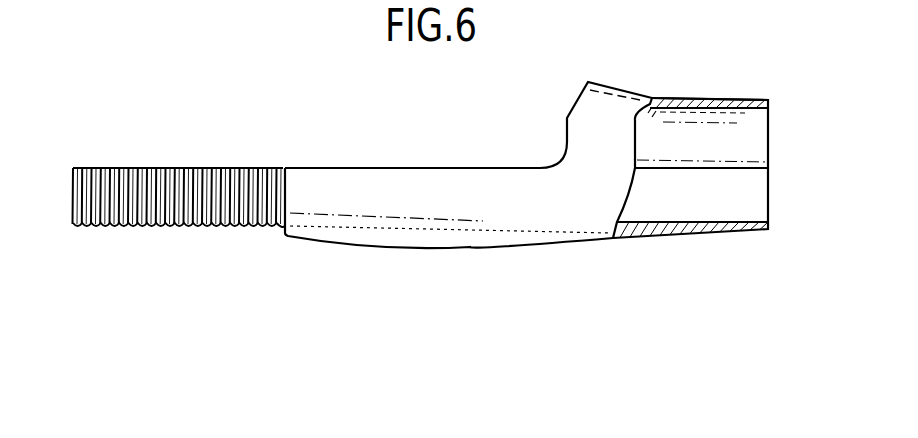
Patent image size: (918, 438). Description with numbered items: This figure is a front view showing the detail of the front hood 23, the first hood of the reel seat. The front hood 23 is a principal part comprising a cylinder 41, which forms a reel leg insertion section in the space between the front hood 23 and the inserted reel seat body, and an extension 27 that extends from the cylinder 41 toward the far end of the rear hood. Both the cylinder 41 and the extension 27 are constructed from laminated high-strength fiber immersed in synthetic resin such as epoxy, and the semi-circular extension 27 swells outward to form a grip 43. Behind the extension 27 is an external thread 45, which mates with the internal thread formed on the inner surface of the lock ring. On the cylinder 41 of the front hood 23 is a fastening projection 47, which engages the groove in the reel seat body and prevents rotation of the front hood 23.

The front hood 23 is at (313, 168).
The extension 27 is at (358, 245).
The cylinder 41 is at (688, 100).
The grip 43 is at (462, 233).
The external thread 45 is at (150, 213).
The fastening projection 47 is at (732, 168).